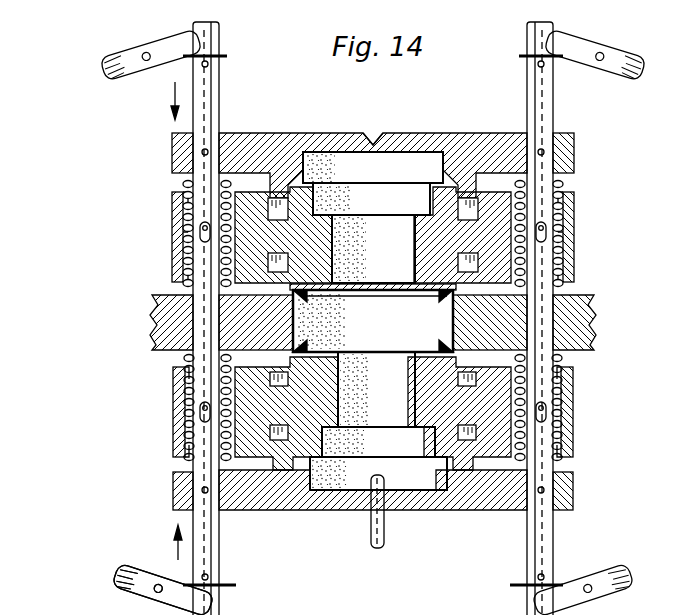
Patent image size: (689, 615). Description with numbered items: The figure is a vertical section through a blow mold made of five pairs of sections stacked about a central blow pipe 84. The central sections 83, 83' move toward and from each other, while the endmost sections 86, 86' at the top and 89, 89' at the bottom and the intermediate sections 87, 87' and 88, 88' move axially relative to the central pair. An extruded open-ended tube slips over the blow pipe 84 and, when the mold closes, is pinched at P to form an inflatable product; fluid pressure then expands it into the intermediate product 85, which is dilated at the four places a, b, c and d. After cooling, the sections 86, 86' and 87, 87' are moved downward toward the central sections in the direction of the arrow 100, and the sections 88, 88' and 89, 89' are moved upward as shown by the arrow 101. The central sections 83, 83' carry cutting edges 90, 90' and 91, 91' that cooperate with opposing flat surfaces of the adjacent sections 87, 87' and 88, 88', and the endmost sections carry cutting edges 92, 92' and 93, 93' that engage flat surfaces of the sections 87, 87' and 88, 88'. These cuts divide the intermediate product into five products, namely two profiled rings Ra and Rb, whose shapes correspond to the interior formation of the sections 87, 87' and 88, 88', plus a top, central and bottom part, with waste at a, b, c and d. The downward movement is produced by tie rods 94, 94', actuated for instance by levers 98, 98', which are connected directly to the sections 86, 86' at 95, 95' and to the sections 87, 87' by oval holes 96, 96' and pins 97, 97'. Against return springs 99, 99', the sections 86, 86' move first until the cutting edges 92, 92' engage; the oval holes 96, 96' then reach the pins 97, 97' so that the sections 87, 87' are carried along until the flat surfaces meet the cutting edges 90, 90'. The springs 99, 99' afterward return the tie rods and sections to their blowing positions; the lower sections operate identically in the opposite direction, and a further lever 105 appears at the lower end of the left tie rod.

The central mold section 83 is at (199, 328).
The central mold section 83' is at (552, 320).
The blow pipe 84 is at (385, 522).
The intermediate product 85 is at (406, 378).
The endmost mold section 86 is at (155, 153).
The endmost mold section 86' is at (591, 153).
The mold section 87 is at (153, 237).
The mold section 87' is at (594, 237).
The mold section 88 is at (154, 412).
The mold section 88' is at (593, 412).
The endmost mold section 89 is at (158, 491).
The endmost mold section 89' is at (596, 489).
The cutting edge 90 is at (319, 301).
The cutting edge 90' is at (417, 311).
The cutting edge 91 is at (316, 338).
The cutting edge 91' is at (544, 336).
The cutting edge 92 is at (283, 187).
The cutting edge 92' is at (462, 186).
The cutting edge 93 is at (286, 455).
The cutting edge 93' is at (459, 454).
The tie rod 94 is at (224, 318).
The tie rod 94' is at (523, 318).
The connection point 95 is at (235, 129).
The connection point 95' is at (570, 124).
The oval hole 96 is at (167, 256).
The oval hole 96' is at (584, 246).
The pin 97 is at (164, 234).
The pin 97' is at (582, 234).
The lever 98 is at (149, 52).
The lever 98' is at (602, 55).
The return spring 99 is at (183, 231).
The return spring 99' is at (570, 230).
The arrow 100 is at (172, 96).
The arrow 101 is at (175, 548).
The lower handle 105 is at (138, 589).
The pinch location P is at (374, 143).
The dilated place a is at (440, 178).
The dilated place b is at (446, 292).
The dilated place c is at (446, 351).
The dilated place d is at (447, 470).
The profiled ring Ra is at (373, 249).
The profiled ring Rb is at (376, 389).